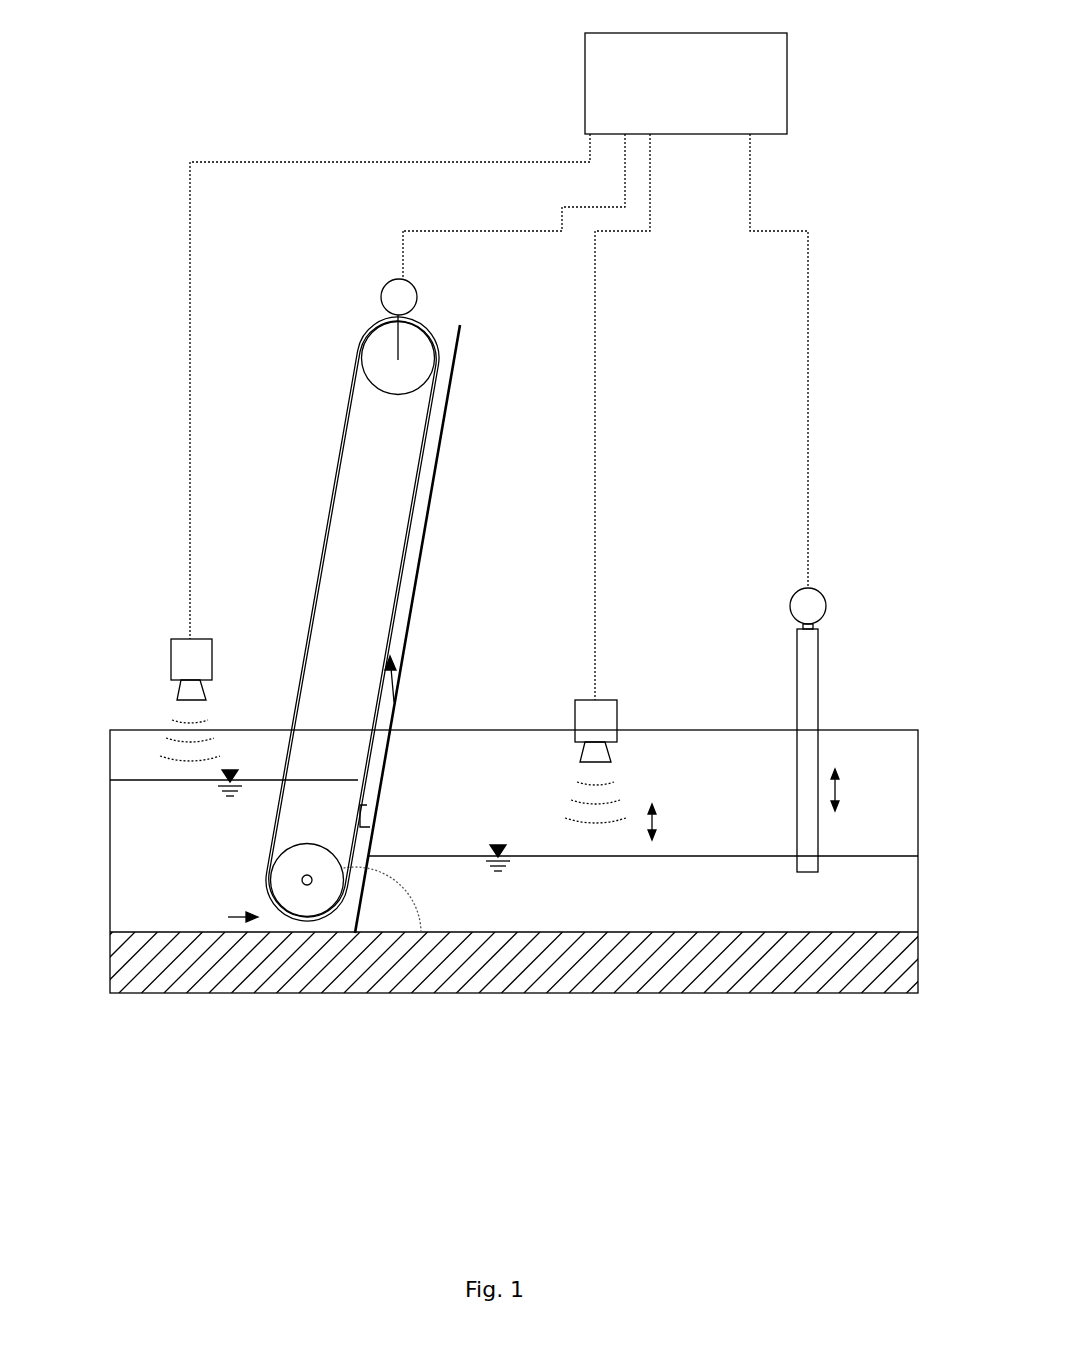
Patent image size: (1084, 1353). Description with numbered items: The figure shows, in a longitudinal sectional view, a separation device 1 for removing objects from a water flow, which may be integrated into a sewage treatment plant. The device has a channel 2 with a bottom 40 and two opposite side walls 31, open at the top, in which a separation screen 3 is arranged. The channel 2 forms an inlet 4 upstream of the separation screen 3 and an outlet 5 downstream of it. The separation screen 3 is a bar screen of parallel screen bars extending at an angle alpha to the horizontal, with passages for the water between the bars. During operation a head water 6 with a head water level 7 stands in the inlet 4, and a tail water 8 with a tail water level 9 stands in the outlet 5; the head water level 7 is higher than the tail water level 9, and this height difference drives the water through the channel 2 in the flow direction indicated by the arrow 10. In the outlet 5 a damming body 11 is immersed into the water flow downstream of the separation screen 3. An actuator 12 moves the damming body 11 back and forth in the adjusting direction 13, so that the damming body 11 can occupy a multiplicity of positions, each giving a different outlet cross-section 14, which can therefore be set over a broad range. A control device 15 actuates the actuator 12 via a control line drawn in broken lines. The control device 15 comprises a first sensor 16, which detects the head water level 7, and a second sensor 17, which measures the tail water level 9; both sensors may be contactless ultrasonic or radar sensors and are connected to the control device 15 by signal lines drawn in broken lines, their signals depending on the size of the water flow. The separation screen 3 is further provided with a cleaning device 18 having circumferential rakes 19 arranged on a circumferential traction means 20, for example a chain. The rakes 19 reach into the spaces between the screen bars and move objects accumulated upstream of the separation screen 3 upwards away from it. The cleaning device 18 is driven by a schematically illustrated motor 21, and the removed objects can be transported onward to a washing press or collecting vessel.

The separation device 1 is at (305, 92).
The channel 2 is at (211, 920).
The separation screen 3 is at (366, 870).
The inlet 4 is at (140, 886).
The outlet 5 is at (537, 897).
The head water 6 is at (195, 890).
The head water level 7 is at (228, 779).
The tail water 8 is at (670, 908).
The tail water level 9 is at (500, 845).
The arrow 10 is at (243, 925).
The damming body 11 is at (810, 675).
The actuator 12 is at (822, 595).
The adjusting direction 13 is at (838, 800).
The outlet cross-section 14 is at (810, 900).
The control device 15 is at (788, 72).
The first sensor 16 is at (171, 640).
The second sensor 17 is at (617, 702).
The cleaning device 18 is at (240, 561).
The rakes 19 is at (360, 828).
The circumferential traction means 20 is at (393, 598).
The motor 21 is at (381, 284).
The side walls 31 is at (465, 748).
The bottom 40 is at (485, 935).